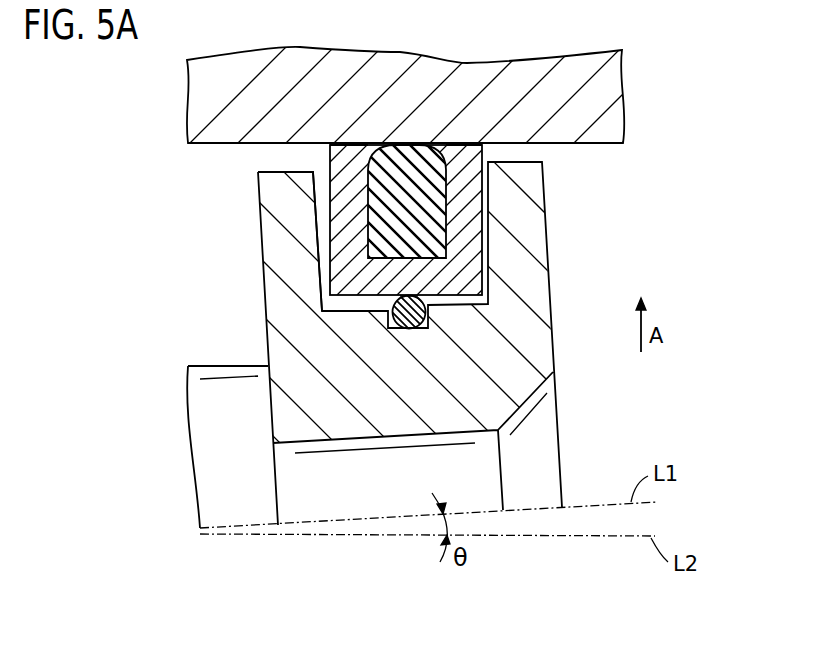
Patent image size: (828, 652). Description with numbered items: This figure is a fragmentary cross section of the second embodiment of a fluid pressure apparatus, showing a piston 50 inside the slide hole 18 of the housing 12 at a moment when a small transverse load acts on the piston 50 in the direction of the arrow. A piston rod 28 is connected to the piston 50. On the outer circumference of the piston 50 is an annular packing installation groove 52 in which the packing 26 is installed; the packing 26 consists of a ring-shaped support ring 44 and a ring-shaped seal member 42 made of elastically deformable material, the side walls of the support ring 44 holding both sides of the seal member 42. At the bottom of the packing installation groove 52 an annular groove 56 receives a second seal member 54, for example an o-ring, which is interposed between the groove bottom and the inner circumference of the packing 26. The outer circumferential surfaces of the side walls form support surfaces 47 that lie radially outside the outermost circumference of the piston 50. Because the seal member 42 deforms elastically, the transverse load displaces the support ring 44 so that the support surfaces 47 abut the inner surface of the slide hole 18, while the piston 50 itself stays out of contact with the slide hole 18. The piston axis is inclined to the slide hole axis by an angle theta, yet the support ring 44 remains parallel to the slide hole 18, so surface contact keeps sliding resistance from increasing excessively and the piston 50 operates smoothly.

The housing 12 is at (613, 123).
The slide hole 18 is at (607, 147).
The packing 26 is at (489, 238).
The piston rod 28 is at (230, 389).
The seal member 42 is at (398, 150).
The support ring 44 is at (362, 144).
The support surface 47 is at (344, 140).
The piston 50 is at (540, 343).
The packing installation groove 52 is at (324, 222).
The second seal member 54 is at (419, 320).
The annular groove 56 is at (400, 298).